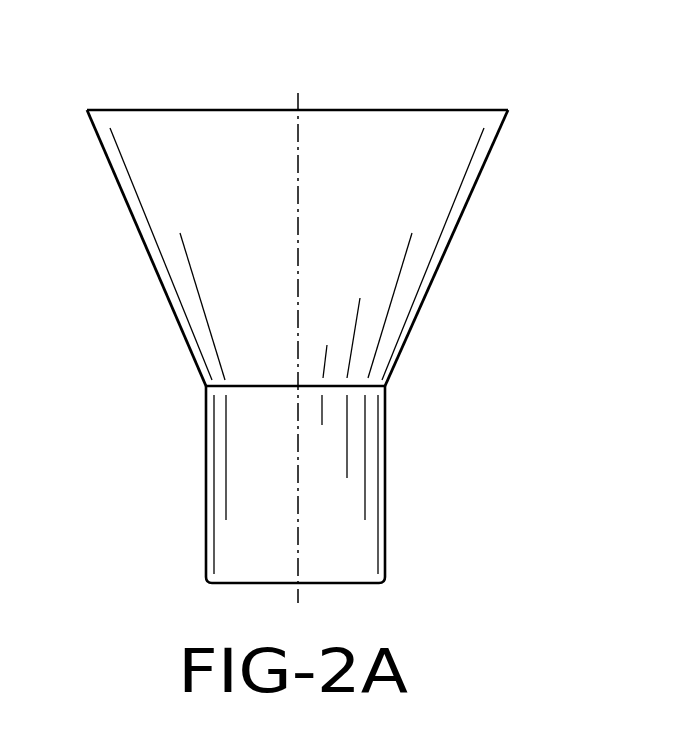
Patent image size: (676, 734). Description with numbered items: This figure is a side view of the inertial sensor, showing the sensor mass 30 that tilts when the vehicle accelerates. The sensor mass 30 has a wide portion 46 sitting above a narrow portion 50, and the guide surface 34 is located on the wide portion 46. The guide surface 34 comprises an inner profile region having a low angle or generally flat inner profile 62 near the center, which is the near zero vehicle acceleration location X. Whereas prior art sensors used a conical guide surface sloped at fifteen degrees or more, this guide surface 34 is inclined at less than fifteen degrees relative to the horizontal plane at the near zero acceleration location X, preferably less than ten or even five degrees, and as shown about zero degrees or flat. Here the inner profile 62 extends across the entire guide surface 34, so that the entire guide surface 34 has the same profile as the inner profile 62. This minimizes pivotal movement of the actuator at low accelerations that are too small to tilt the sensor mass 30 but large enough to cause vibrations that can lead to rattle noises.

The sensor mass 30 is at (286, 301).
The guide surface 34 is at (163, 109).
The wide portion 46 is at (450, 236).
The narrow portion 50 is at (386, 490).
The inner profile 62 is at (284, 109).
The near zero vehicle acceleration location X is at (299, 172).